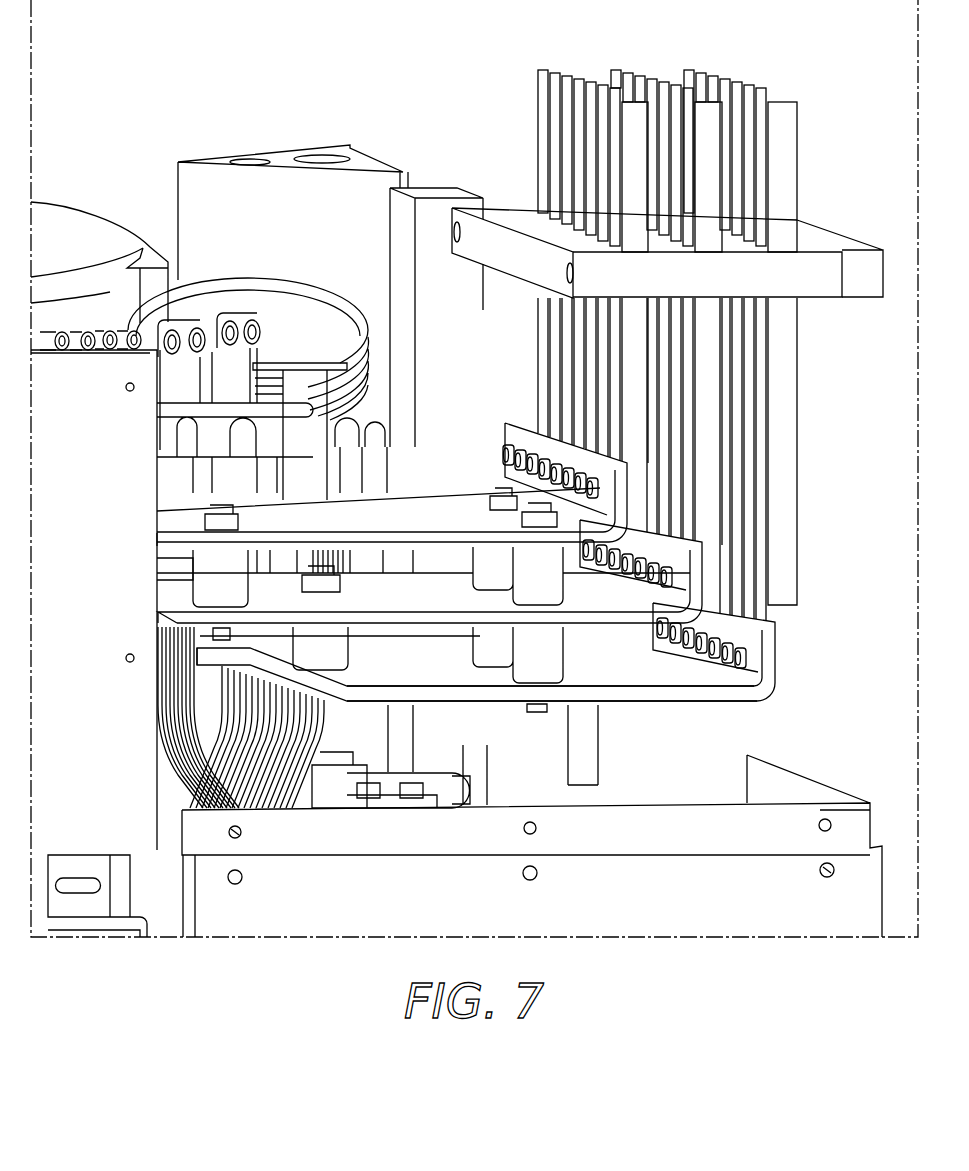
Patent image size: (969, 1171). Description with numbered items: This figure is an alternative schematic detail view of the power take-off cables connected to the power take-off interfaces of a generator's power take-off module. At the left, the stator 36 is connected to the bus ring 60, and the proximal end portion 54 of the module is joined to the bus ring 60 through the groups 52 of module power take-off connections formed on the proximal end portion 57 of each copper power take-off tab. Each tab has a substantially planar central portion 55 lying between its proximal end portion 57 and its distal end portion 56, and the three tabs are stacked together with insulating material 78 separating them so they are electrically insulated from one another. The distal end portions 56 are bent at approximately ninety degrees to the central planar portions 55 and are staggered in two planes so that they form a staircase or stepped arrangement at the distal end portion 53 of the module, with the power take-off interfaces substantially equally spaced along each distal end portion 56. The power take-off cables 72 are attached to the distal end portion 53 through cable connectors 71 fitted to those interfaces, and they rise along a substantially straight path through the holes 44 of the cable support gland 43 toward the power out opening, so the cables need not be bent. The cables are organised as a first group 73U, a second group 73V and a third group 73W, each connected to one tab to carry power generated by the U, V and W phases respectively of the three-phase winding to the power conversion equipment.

The stator 36 is at (203, 768).
The cable support gland 43 is at (873, 298).
The holes 44 is at (801, 240).
The group of module power take-off connections 52 is at (85, 330).
The distal end portion of the power take-off module 53 is at (711, 693).
The proximal end portion of the power take-off module 54 is at (238, 367).
The central planar portion 55 is at (445, 583).
The distal end portion of the power take-off tab 56 is at (623, 480).
The proximal end portion of the power take-off tab 57 is at (158, 519).
The bus ring 60 is at (256, 288).
The cable connectors 71 is at (793, 597).
The power take-off cables 72 is at (790, 141).
The first group of power take-off cables 73U is at (563, 58).
The second group of power take-off cables 73V is at (638, 54).
The third group of power take-off cables 73W is at (802, 88).
The insulating material 78 is at (563, 560).